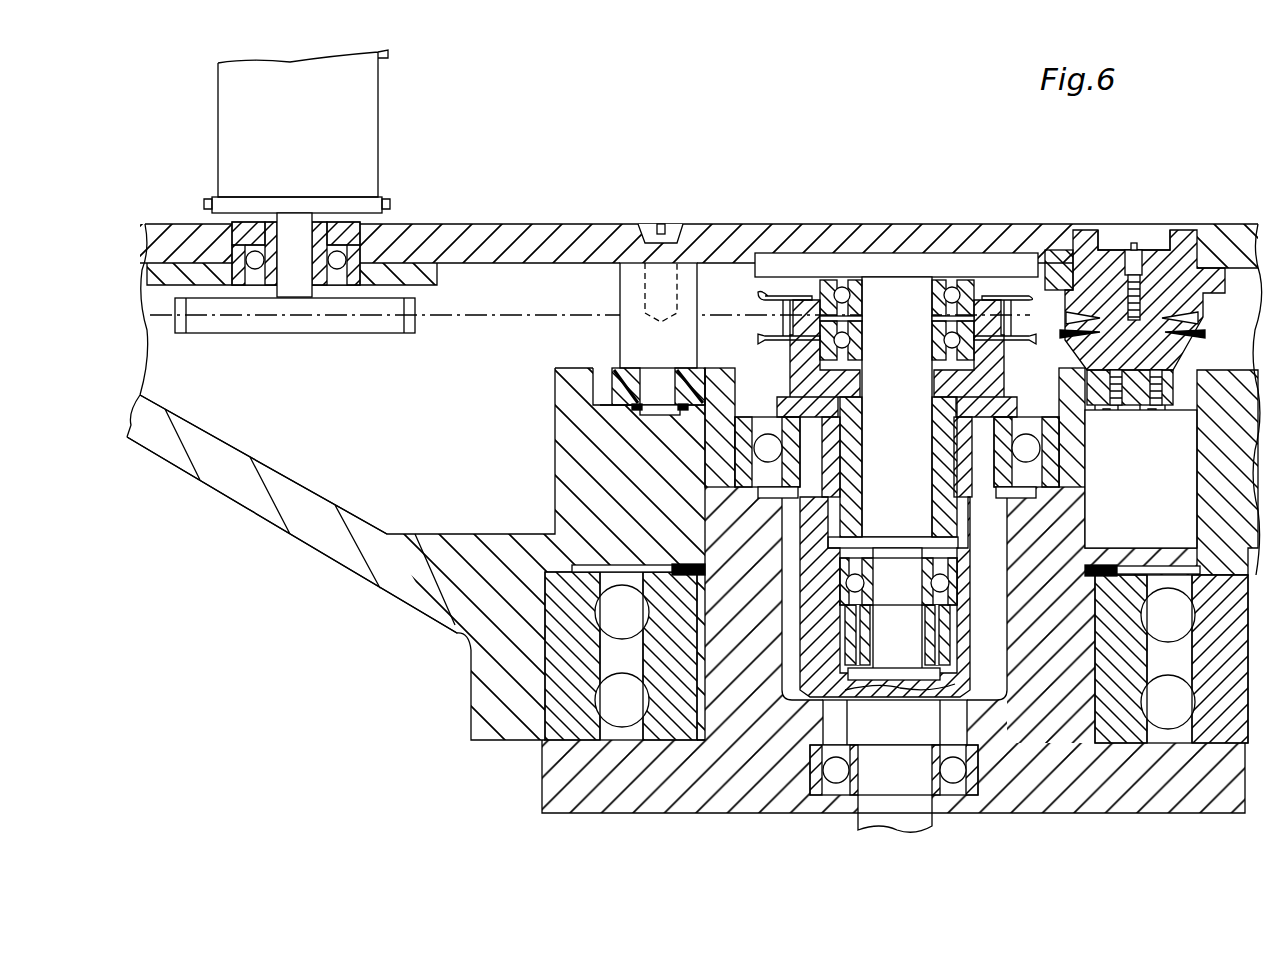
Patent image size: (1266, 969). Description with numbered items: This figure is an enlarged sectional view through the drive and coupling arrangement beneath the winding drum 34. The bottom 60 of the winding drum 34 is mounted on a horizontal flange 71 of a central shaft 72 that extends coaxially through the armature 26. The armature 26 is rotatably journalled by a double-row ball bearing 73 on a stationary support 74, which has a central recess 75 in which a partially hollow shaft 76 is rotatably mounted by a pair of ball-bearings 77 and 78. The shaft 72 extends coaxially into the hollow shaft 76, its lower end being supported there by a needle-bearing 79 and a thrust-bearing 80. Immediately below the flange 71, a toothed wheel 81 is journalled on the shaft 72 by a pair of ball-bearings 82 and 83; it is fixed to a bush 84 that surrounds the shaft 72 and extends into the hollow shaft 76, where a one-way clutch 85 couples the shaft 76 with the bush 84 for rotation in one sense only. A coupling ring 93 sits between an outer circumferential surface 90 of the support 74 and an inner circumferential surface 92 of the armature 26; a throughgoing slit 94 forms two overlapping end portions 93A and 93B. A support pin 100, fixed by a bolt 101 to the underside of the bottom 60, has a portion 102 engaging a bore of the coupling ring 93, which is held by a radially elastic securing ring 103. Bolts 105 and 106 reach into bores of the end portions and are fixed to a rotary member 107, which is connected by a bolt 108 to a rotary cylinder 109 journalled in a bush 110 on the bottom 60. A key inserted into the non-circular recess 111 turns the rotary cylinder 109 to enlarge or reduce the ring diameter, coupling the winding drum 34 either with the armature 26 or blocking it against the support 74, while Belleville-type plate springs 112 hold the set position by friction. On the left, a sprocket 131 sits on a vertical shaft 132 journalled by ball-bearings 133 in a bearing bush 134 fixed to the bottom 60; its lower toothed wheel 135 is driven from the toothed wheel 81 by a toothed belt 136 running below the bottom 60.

The armature 26 is at (300, 538).
The winding drum 34 is at (614, 192).
The bottom of the winding drum 60 is at (541, 229).
The horizontal flange 71 is at (790, 252).
The central shaft 72 is at (895, 280).
The double-row ball bearing 73 is at (607, 650).
The stationary support 74 is at (560, 780).
The central recess 75 is at (775, 575).
The partially hollow shaft 76 is at (930, 676).
The ball-bearing 77 is at (948, 770).
The ball-bearing 78 is at (760, 462).
The needle-bearing 79 is at (948, 635).
The thrust-bearing 80 is at (848, 592).
The toothed wheel 81 is at (770, 298).
The ball-bearing 82 is at (850, 305).
The ball-bearing 83 is at (850, 352).
The bush 84 is at (850, 388).
The one-way clutch 85 is at (955, 496).
The outer circumferential surface of the support 90 is at (720, 380).
The inner circumferential surface of the armature 92 is at (606, 372).
The coupling ring 93 is at (697, 410).
The end portion 93A is at (1100, 416).
The end portion 93B is at (1162, 416).
The throughgoing slit 94 is at (1133, 418).
The support pin 100 is at (625, 290).
The bolt 101 is at (683, 230).
The portion of the support pin 102 is at (668, 413).
The radially elastic securing ring 103 is at (633, 411).
The bolt 105 is at (1090, 350).
The bolt 106 is at (1178, 352).
The rotary member 107 is at (1198, 330).
The bolt 108 is at (1134, 248).
The rotary cylinder 109 is at (1185, 240).
The bush 110 is at (1055, 268).
The recess 111 is at (1108, 245).
The Belleville-type plate springs 112 is at (1066, 318).
The sprocket 131 is at (378, 92).
The vertical shaft 132 is at (290, 220).
The ball-bearings 133 is at (262, 272).
The bearing bush 134 is at (360, 225).
The toothed wheel 135 is at (368, 336).
The toothed belt 136 is at (465, 325).